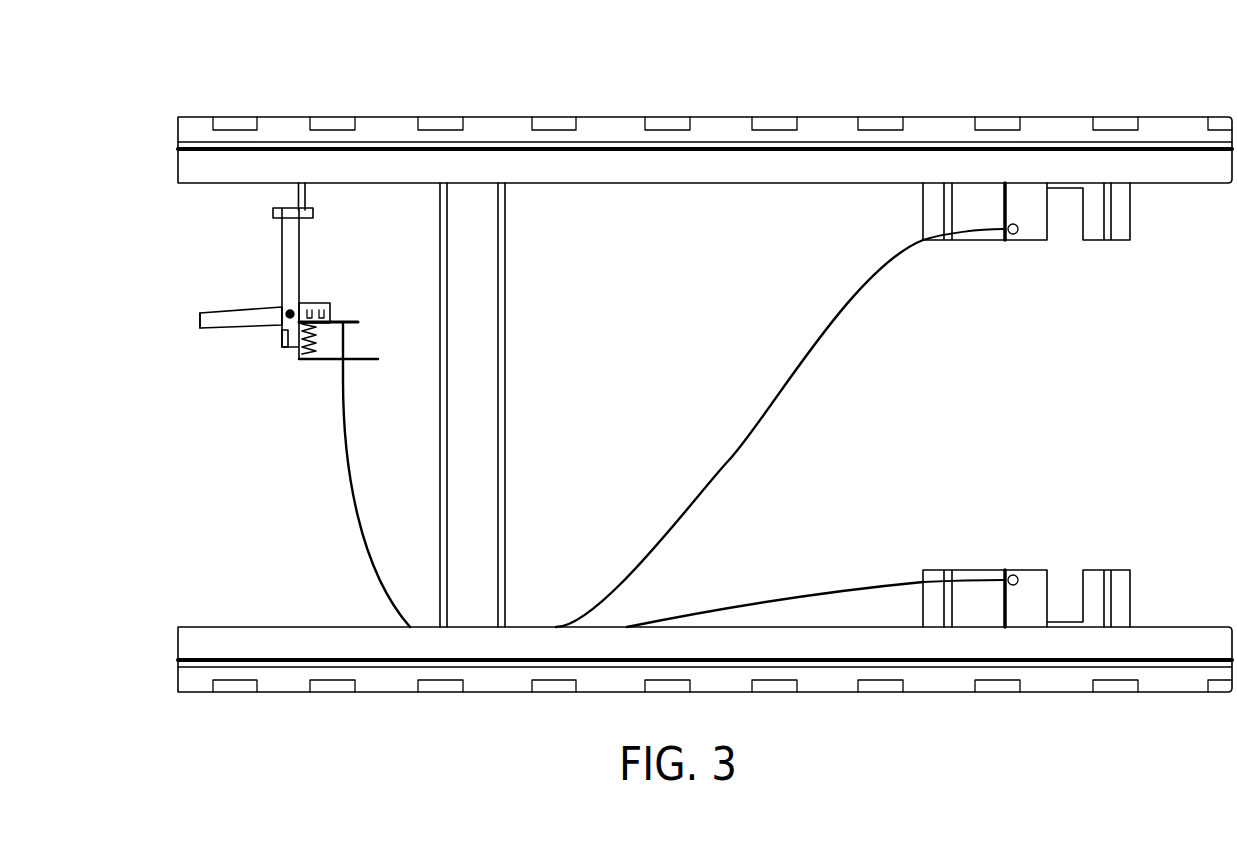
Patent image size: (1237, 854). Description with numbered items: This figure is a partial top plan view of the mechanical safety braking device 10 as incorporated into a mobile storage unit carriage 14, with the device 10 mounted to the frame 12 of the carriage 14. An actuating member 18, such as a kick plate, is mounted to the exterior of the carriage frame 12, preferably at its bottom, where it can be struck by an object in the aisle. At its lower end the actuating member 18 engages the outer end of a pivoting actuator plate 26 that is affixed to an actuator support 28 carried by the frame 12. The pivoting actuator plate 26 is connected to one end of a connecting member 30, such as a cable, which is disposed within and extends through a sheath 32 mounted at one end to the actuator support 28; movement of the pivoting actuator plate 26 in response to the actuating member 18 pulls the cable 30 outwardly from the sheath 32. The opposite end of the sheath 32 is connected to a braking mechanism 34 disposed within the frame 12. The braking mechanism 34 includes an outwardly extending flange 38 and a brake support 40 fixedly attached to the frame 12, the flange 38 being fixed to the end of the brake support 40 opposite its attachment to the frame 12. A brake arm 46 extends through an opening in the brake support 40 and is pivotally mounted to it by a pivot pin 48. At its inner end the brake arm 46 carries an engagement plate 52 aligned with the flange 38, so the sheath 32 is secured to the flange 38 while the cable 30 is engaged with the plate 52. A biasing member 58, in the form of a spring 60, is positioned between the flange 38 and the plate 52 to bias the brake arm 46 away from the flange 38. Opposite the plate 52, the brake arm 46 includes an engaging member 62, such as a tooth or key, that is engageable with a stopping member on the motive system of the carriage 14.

The mechanical safety braking device 10 is at (249, 421).
The frame 12 is at (518, 140).
The mobile storage unit carriage 14 is at (754, 94).
The actuating member 18 is at (962, 114).
The pivoting actuator plate 26 is at (1006, 205).
The actuator support 28 is at (1023, 246).
The connecting member 30 is at (988, 241).
The sheath 32 is at (879, 274).
The braking mechanism 34 is at (339, 301).
The flange 38 is at (362, 361).
The brake support 40 is at (293, 236).
The brake arm 46 is at (245, 306).
The pivot pin 48 is at (290, 308).
The engagement plate 52 is at (350, 320).
The biasing member 58 is at (280, 335).
The spring 60 is at (317, 343).
The engaging member 62 is at (212, 308).